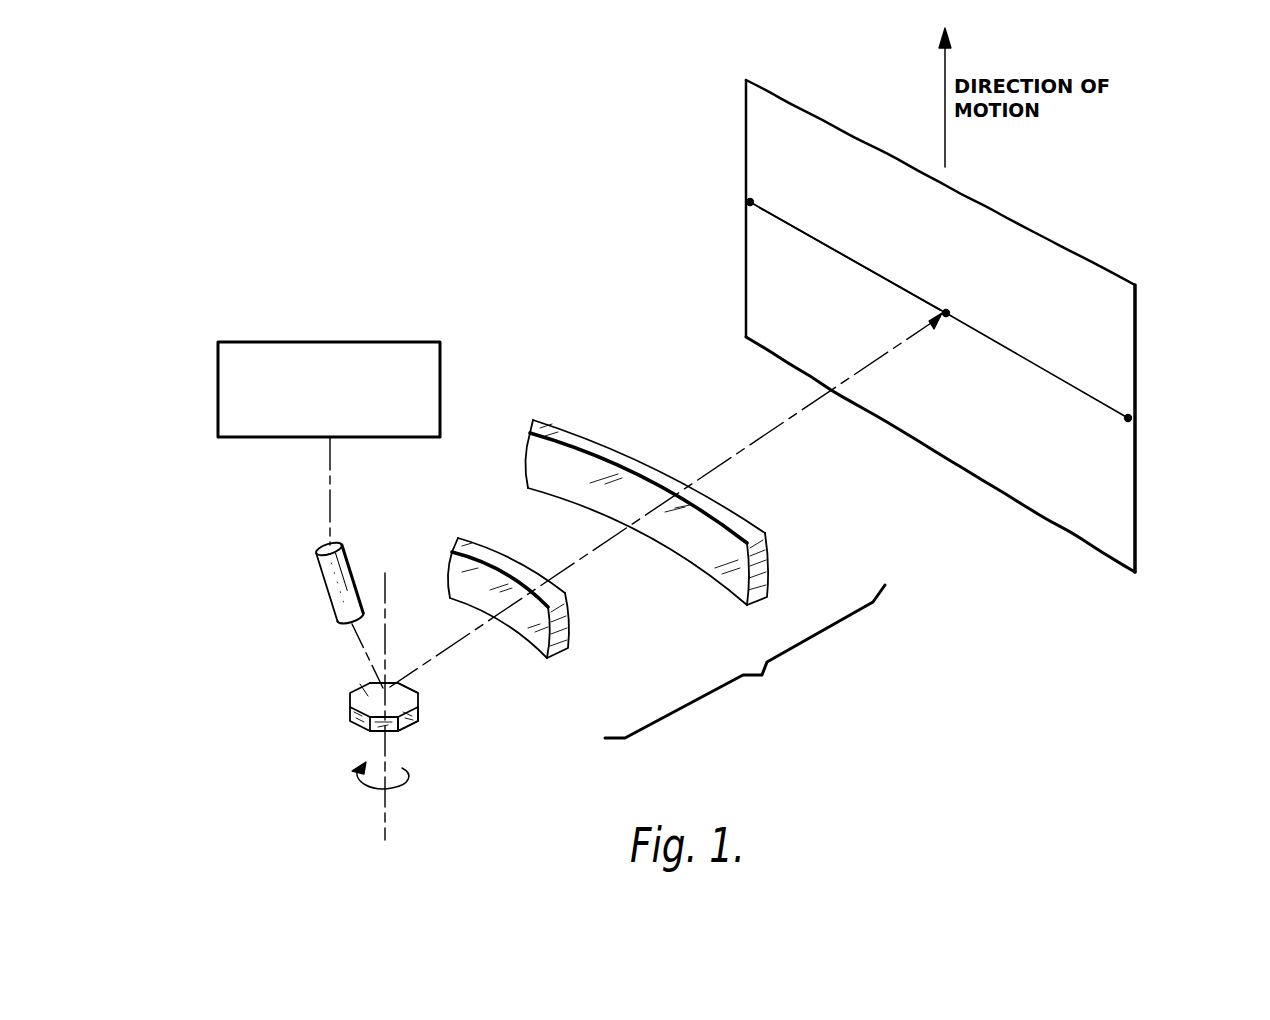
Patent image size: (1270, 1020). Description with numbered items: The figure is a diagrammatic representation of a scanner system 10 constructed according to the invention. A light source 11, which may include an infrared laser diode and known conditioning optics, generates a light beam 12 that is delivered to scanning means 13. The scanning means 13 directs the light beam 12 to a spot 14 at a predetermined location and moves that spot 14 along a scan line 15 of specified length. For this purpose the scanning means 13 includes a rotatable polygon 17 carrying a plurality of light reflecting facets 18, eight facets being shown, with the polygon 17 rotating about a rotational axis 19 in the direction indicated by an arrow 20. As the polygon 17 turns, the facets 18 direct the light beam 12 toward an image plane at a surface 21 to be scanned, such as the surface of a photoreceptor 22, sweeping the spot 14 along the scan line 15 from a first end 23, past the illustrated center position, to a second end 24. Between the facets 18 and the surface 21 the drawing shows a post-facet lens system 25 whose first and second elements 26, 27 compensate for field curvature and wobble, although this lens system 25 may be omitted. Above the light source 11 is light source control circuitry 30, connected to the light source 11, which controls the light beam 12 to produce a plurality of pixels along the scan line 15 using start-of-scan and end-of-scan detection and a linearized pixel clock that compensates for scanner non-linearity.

The scanner system 10 is at (476, 222).
The light source 11 is at (318, 583).
The light beam 12 is at (752, 446).
The scanning means 13 is at (344, 737).
The spot 14 is at (920, 310).
The scan line 15 is at (840, 262).
The polygon 17 is at (366, 688).
The light reflecting facets 18 is at (420, 714).
The rotational axis 19 is at (385, 822).
The arrow 20 is at (408, 784).
The surface 21 is at (796, 230).
The photoreceptor 22 is at (1136, 372).
The first end 23 is at (748, 203).
The second end 24 is at (1127, 419).
The post-facet lens system 25 is at (745, 661).
The first element 26 is at (556, 640).
The second element 27 is at (764, 560).
The light source control circuitry 30 is at (218, 386).